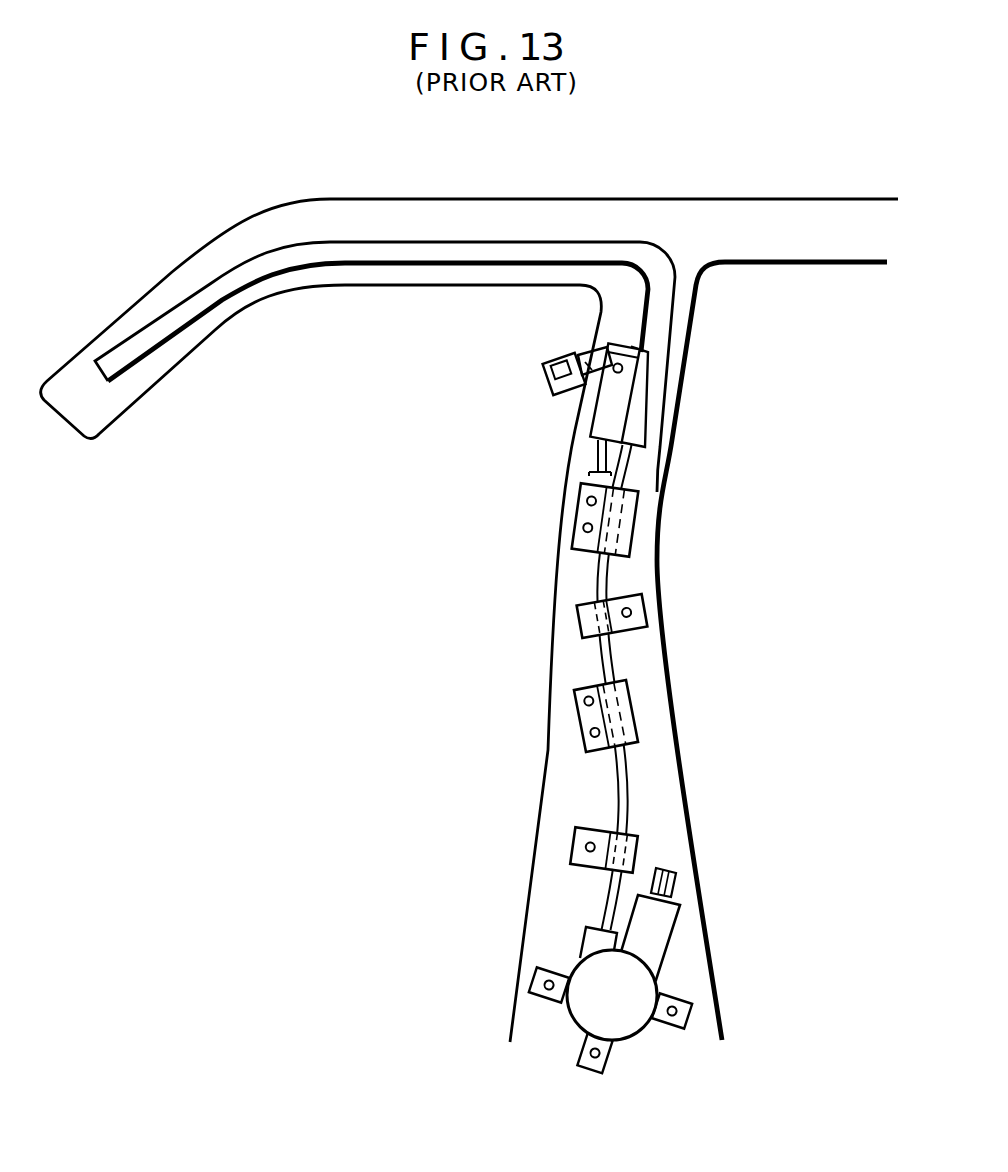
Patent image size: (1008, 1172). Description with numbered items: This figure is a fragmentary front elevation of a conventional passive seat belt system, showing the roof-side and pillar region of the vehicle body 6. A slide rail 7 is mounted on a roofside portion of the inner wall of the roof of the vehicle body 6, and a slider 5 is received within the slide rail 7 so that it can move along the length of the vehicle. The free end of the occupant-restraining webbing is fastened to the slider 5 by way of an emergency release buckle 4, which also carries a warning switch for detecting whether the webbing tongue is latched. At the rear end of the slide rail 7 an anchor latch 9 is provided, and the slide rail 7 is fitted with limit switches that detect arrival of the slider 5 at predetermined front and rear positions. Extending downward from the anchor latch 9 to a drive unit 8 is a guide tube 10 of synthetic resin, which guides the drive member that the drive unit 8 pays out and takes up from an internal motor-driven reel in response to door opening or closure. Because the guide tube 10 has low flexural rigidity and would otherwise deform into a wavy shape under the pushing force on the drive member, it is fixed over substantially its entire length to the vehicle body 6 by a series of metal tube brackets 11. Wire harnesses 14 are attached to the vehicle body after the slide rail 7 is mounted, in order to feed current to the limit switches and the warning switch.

The emergency release buckle 4 is at (555, 393).
The slider 5 is at (590, 360).
The vehicle body 6 is at (607, 227).
The slide rail 7 is at (413, 252).
The drive unit 8 is at (640, 993).
The anchor latch 9 is at (612, 412).
The guide tube 10 is at (627, 802).
The tube brackets 11 is at (640, 610).
The wire harnesses 14 is at (594, 463).